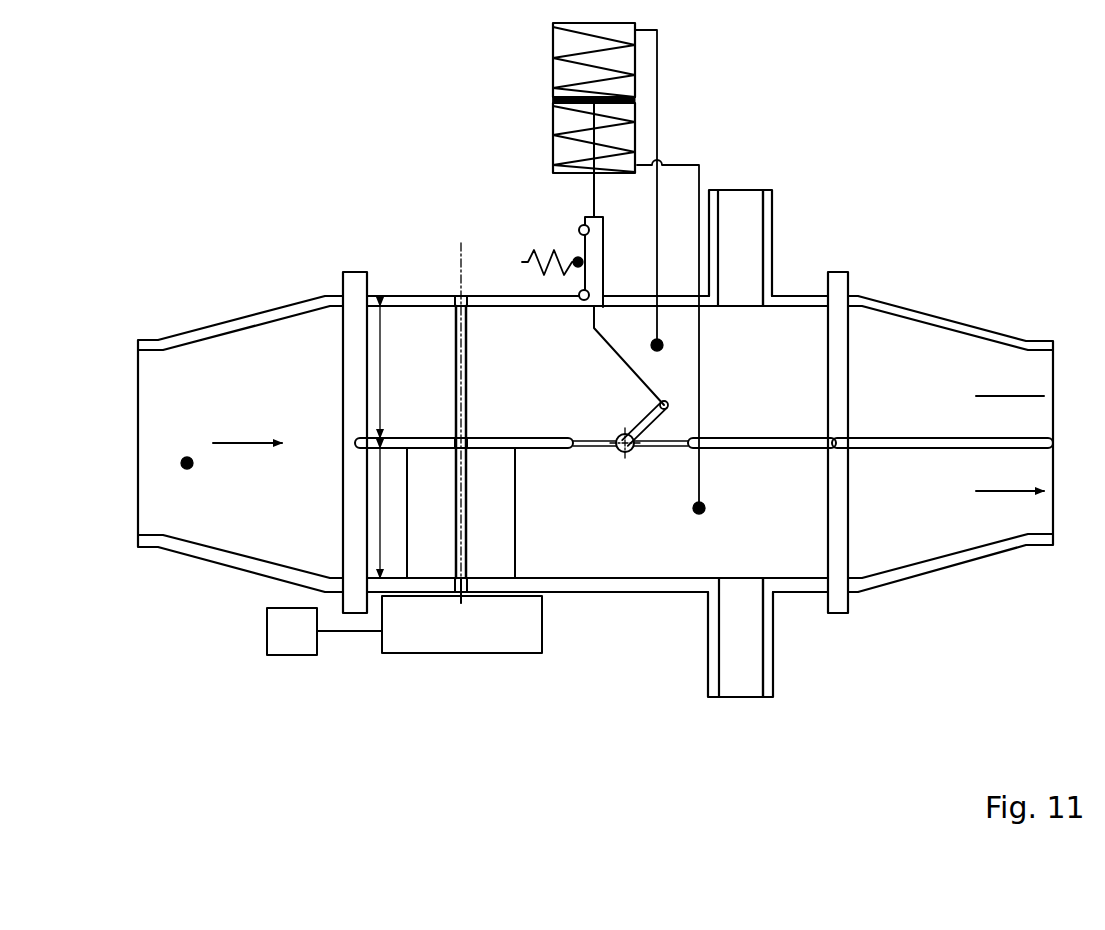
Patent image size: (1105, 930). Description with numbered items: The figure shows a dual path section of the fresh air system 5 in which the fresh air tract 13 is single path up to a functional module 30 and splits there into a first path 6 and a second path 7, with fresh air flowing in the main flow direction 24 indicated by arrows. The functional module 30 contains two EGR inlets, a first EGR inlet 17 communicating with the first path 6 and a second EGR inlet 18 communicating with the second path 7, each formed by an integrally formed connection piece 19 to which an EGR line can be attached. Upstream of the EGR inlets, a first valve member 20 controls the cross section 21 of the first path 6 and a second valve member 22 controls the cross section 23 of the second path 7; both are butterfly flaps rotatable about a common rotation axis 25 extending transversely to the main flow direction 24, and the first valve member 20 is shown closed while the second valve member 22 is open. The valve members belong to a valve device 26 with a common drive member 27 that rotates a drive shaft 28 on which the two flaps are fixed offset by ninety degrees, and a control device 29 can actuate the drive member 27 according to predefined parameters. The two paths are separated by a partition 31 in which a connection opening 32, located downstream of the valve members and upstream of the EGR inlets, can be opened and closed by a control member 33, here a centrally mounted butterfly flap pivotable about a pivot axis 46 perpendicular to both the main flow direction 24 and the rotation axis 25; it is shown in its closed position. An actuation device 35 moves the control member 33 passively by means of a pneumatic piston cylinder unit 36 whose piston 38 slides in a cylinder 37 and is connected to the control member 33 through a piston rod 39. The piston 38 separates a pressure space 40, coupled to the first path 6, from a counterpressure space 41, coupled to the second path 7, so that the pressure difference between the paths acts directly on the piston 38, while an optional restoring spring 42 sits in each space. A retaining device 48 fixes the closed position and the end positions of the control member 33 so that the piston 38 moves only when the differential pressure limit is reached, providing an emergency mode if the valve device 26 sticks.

The fresh air system 5 is at (225, 170).
The first path 6 is at (540, 369).
The second path 7 is at (540, 502).
The fresh air tract 13 is at (230, 322).
The first EGR inlet 17 is at (752, 203).
The second EGR inlet 18 is at (740, 685).
The connection piece 19 is at (775, 245).
The first valve member 20 is at (455, 400).
The cross section 21 is at (380, 375).
The second valve member 22 is at (420, 515).
The cross section 23 is at (380, 510).
The main flow direction 24 is at (248, 440).
The rotation axis 25 is at (461, 245).
The valve device 26 is at (460, 655).
The drive member 27 is at (425, 645).
The drive shaft 28 is at (470, 592).
The control device 29 is at (279, 643).
The functional module 30 is at (584, 596).
The partition 31 is at (783, 437).
The connection opening 32 is at (687, 447).
The control member 33 is at (597, 452).
The actuation device 35 is at (560, 256).
The pneumatic piston cylinder unit 36 is at (553, 113).
The cylinder 37 is at (635, 65).
The piston 38 is at (630, 97).
The piston rod 39 is at (593, 192).
The pressure space 40 is at (560, 52).
The counterpressure space 41 is at (563, 145).
The restoring spring 42 is at (623, 43).
The pivot axis 46 is at (630, 452).
The retaining device 48 is at (603, 268).